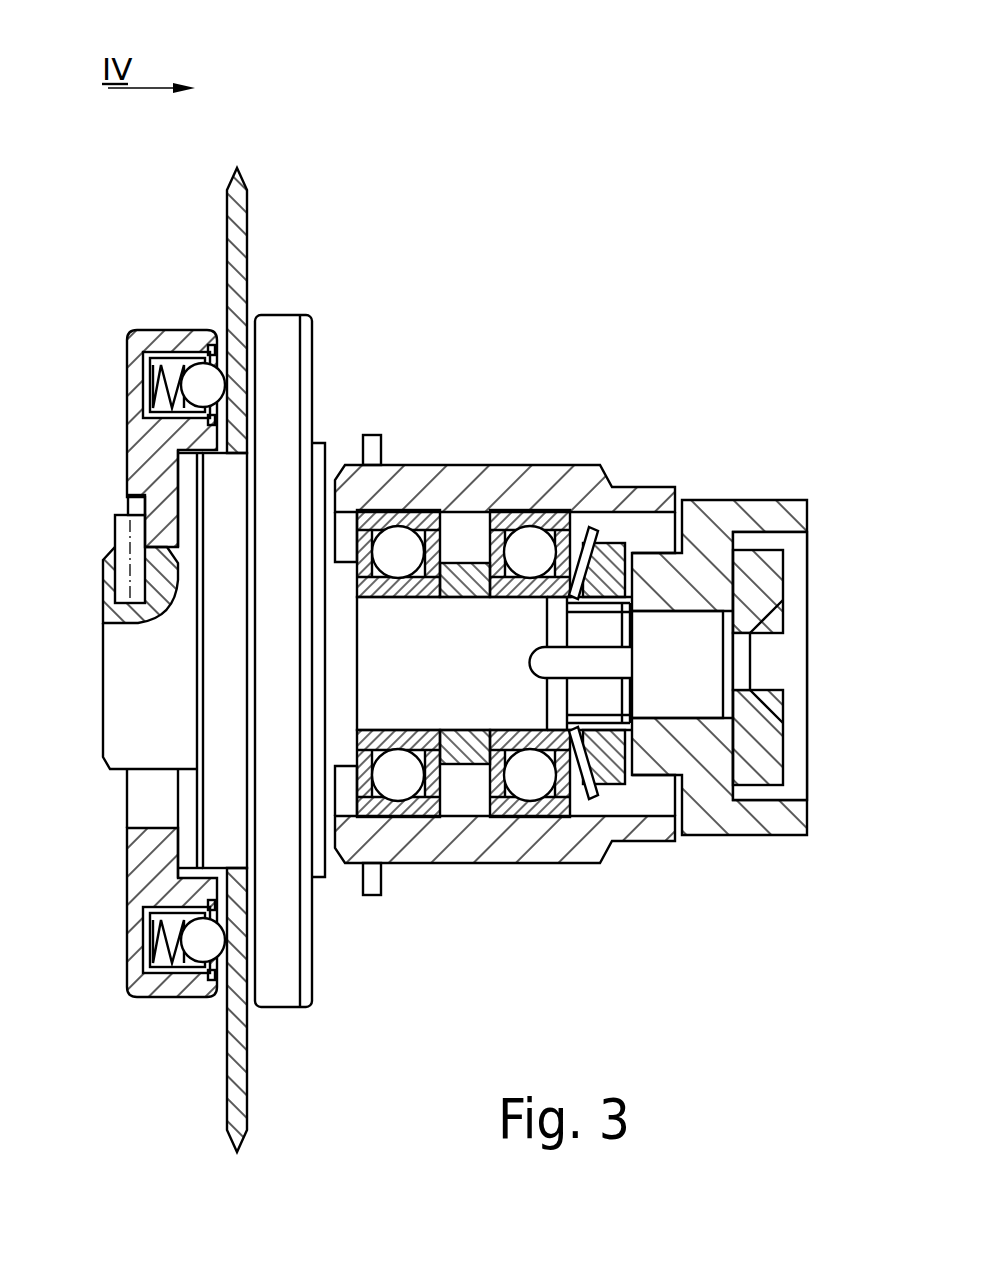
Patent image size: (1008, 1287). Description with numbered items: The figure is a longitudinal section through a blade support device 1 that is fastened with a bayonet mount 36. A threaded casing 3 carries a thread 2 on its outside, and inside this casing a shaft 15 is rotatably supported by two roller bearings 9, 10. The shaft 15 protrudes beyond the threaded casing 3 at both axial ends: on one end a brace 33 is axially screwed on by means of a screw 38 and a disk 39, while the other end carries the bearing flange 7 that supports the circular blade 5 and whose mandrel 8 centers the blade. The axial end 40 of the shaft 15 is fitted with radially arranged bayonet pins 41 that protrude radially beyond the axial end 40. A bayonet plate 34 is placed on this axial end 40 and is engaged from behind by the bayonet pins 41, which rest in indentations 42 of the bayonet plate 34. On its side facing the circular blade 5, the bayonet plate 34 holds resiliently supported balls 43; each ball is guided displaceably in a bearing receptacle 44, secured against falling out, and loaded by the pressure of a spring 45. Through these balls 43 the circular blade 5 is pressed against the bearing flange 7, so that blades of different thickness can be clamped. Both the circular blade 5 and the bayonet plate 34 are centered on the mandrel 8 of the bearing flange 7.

The blade support device 1 is at (572, 222).
The thread 2 is at (555, 472).
The threaded casing 3 is at (536, 843).
The blade 5 is at (238, 172).
The bearing flange 7 is at (292, 298).
The mandrel 8 is at (230, 825).
The roller bearing 9 is at (402, 545).
The roller bearing 10 is at (532, 545).
The shaft 15 is at (471, 688).
The brace 33 is at (708, 820).
The bayonet plate 34 is at (143, 340).
The bayonet mount 36 is at (195, 1058).
The screw 38 is at (768, 666).
The disk 39 is at (765, 583).
The axial end 40 is at (127, 690).
The bayonet pins 41 is at (117, 547).
The indentations 42 is at (125, 497).
The balls 43 is at (205, 378).
The bearing receptacle 44 is at (170, 383).
The spring 45 is at (150, 958).